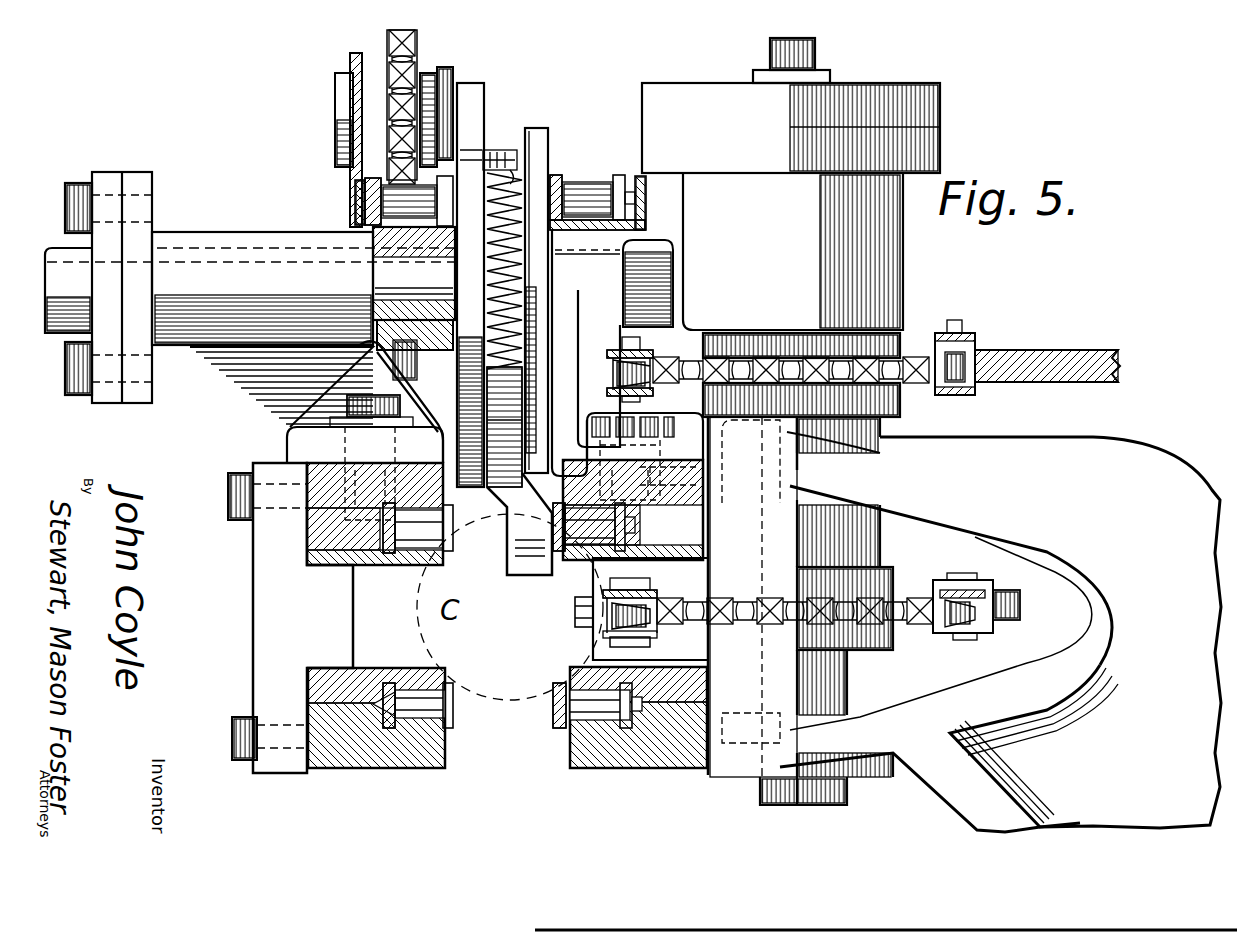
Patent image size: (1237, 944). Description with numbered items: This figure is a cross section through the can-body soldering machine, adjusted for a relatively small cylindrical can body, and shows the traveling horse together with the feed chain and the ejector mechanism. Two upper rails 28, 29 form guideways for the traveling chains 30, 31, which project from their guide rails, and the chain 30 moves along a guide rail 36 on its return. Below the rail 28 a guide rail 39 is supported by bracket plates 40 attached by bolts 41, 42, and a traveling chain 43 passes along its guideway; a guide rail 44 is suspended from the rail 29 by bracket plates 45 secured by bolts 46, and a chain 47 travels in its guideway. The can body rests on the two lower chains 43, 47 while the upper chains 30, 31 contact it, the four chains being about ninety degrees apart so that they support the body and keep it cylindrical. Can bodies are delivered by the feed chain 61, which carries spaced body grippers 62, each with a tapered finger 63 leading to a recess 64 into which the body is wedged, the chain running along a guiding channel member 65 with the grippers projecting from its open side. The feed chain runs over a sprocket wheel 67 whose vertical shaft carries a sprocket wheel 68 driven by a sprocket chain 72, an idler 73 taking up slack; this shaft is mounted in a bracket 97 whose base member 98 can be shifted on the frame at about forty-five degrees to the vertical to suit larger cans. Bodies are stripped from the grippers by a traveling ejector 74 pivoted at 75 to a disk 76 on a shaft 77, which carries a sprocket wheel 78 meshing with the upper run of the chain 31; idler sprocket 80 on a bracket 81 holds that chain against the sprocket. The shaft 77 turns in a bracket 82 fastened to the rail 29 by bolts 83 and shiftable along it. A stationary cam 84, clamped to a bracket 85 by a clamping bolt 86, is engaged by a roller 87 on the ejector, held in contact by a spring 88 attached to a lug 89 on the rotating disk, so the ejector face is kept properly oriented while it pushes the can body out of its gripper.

The idler sprocket 80 is at (387, 48).
The bracket 81 is at (335, 88).
The disk 76 is at (470, 90).
The lug 89 is at (492, 150).
The stationary cam 84 is at (545, 128).
The spring 88 is at (513, 187).
The traveling chain 30 is at (590, 182).
The guide rail 36 is at (355, 206).
The clamping bolt 86 is at (656, 268).
The bracket 85 is at (567, 357).
The sprocket wheel 68 is at (790, 372).
The sprocket chain 72 is at (955, 333).
The idler 73 is at (1060, 362).
The bracket 82 is at (193, 287).
The shaft 77 is at (414, 288).
The traveling chain 31 is at (365, 200).
The sprocket wheel 78 is at (403, 349).
The bolts 83 is at (347, 407).
The rail 29 is at (292, 460).
The bolts 46 is at (232, 478).
The bracket plates 45 is at (303, 618).
The chain 47 is at (410, 695).
The guide rail 44 is at (385, 755).
The traveling ejector 74 is at (520, 560).
The tapered finger 63 is at (603, 592).
The recess 64 is at (575, 612).
The body grippers 62 is at (610, 640).
The guiding channel member 65 is at (650, 638).
The feed chain 61 is at (683, 590).
The sprocket wheel 67 is at (835, 600).
The bracket 97 is at (1093, 615).
The base member 98 is at (973, 810).
The traveling chain 43 is at (590, 698).
The guide rail 39 is at (592, 750).
The bolt 42 is at (772, 713).
The bolt 41 is at (780, 478).
The bracket plates 40 is at (730, 542).
The pivot 75 is at (575, 437).
The rail 28 is at (668, 470).
The roller 87 is at (649, 365).